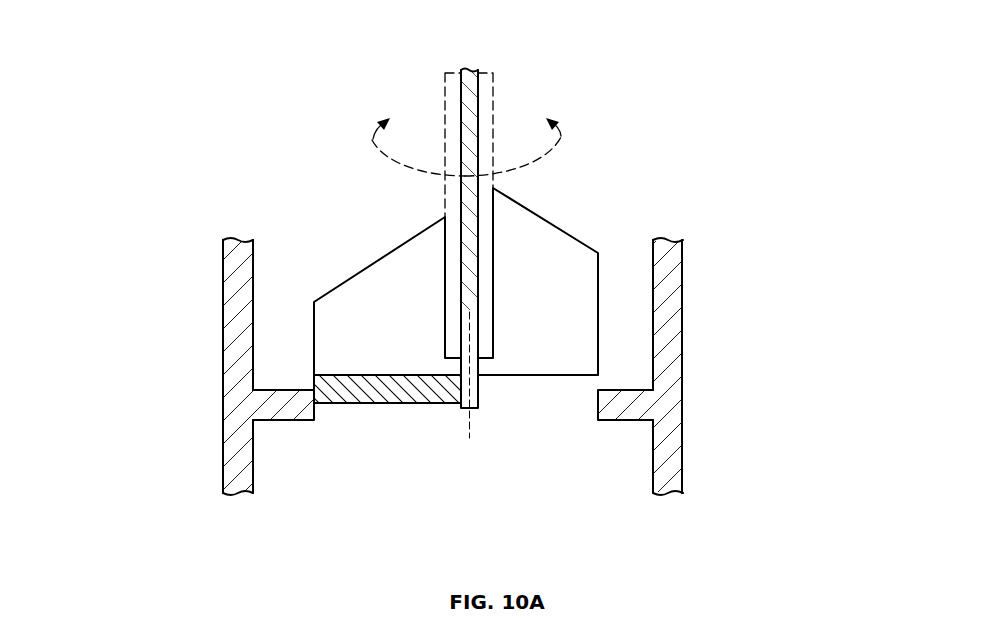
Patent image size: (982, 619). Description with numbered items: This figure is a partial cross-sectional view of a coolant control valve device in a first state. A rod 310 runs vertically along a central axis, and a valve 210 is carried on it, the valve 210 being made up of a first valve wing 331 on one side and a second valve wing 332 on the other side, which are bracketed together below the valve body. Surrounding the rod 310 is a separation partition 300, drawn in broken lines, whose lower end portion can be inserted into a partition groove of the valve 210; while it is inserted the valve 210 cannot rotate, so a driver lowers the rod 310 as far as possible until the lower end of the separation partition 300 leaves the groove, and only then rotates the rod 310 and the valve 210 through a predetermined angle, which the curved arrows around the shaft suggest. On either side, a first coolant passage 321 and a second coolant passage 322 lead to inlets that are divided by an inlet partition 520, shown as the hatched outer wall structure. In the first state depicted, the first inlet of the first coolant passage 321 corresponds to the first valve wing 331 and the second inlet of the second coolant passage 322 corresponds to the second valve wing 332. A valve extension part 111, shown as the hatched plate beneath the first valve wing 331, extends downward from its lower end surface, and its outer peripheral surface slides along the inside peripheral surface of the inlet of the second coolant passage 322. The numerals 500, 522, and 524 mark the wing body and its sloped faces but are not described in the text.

The separation partition 300 is at (470, 234).
The rod 310 is at (461, 86).
The first coolant passage 321 is at (338, 133).
The second coolant passage 322 is at (618, 133).
The wedge member 500 is at (464, 330).
The first inclined portion 522 is at (338, 373).
The second inclined portion 524 is at (598, 288).
The inlet partition 520 is at (285, 400).
The valve extension part 111 is at (348, 390).
The first valve wing 331 is at (408, 353).
The second valve wing 332 is at (540, 350).
The valve 210 is at (456, 448).